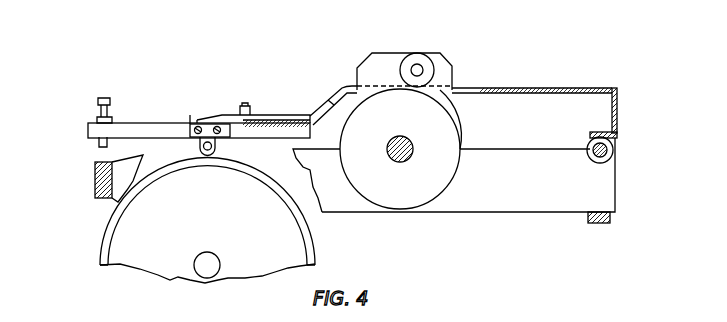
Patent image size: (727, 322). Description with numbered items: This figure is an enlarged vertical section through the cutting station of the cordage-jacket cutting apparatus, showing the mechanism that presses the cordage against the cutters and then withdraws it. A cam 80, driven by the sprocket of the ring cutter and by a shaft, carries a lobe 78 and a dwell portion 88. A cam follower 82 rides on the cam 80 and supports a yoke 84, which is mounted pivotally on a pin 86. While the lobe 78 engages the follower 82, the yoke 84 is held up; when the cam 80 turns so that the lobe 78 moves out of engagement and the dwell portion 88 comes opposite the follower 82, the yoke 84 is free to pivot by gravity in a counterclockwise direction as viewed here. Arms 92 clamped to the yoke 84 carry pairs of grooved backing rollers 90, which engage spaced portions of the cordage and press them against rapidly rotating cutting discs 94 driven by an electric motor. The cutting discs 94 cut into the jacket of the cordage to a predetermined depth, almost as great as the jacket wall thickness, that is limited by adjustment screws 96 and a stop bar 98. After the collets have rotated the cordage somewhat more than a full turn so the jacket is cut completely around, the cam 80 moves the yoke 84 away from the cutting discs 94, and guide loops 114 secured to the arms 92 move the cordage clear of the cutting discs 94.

The lobe 78 is at (345, 155).
The cam 80 is at (452, 182).
The cam follower 82 is at (422, 53).
The yoke 84 is at (500, 88).
The pin 86 is at (615, 157).
The dwell portion 88 is at (442, 117).
The grooved backing rollers 90 is at (220, 121).
The arms 92 is at (135, 132).
The cutting discs 94 is at (108, 238).
The adjustment screws 96 is at (102, 98).
The stop bar 98 is at (95, 185).
The guide loops 114 is at (198, 142).